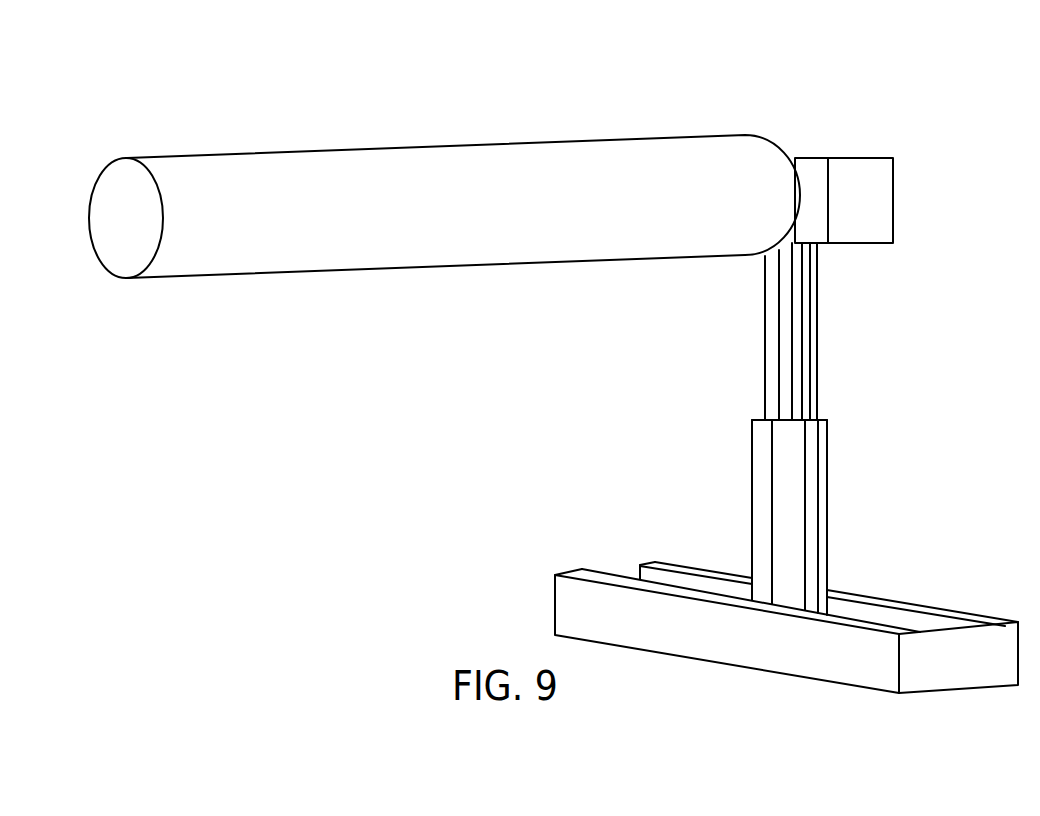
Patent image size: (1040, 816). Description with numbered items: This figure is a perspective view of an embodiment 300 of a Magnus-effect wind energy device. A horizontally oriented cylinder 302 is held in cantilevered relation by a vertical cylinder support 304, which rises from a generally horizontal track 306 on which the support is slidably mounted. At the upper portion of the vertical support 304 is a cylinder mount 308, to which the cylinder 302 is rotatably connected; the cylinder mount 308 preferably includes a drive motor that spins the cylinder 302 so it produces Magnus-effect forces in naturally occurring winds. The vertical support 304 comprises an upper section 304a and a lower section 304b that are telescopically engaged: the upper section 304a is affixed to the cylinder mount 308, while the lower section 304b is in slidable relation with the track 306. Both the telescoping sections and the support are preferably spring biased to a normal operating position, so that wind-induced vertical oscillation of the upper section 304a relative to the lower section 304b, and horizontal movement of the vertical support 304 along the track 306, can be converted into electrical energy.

The embodiment 300 is at (405, 112).
The cylinder 302 is at (489, 143).
The vertical cylinder support 304 is at (858, 395).
The upper section 304a is at (820, 308).
The lower section 304b is at (827, 477).
The horizontal track 306 is at (868, 598).
The cylinder mount 308 is at (893, 198).